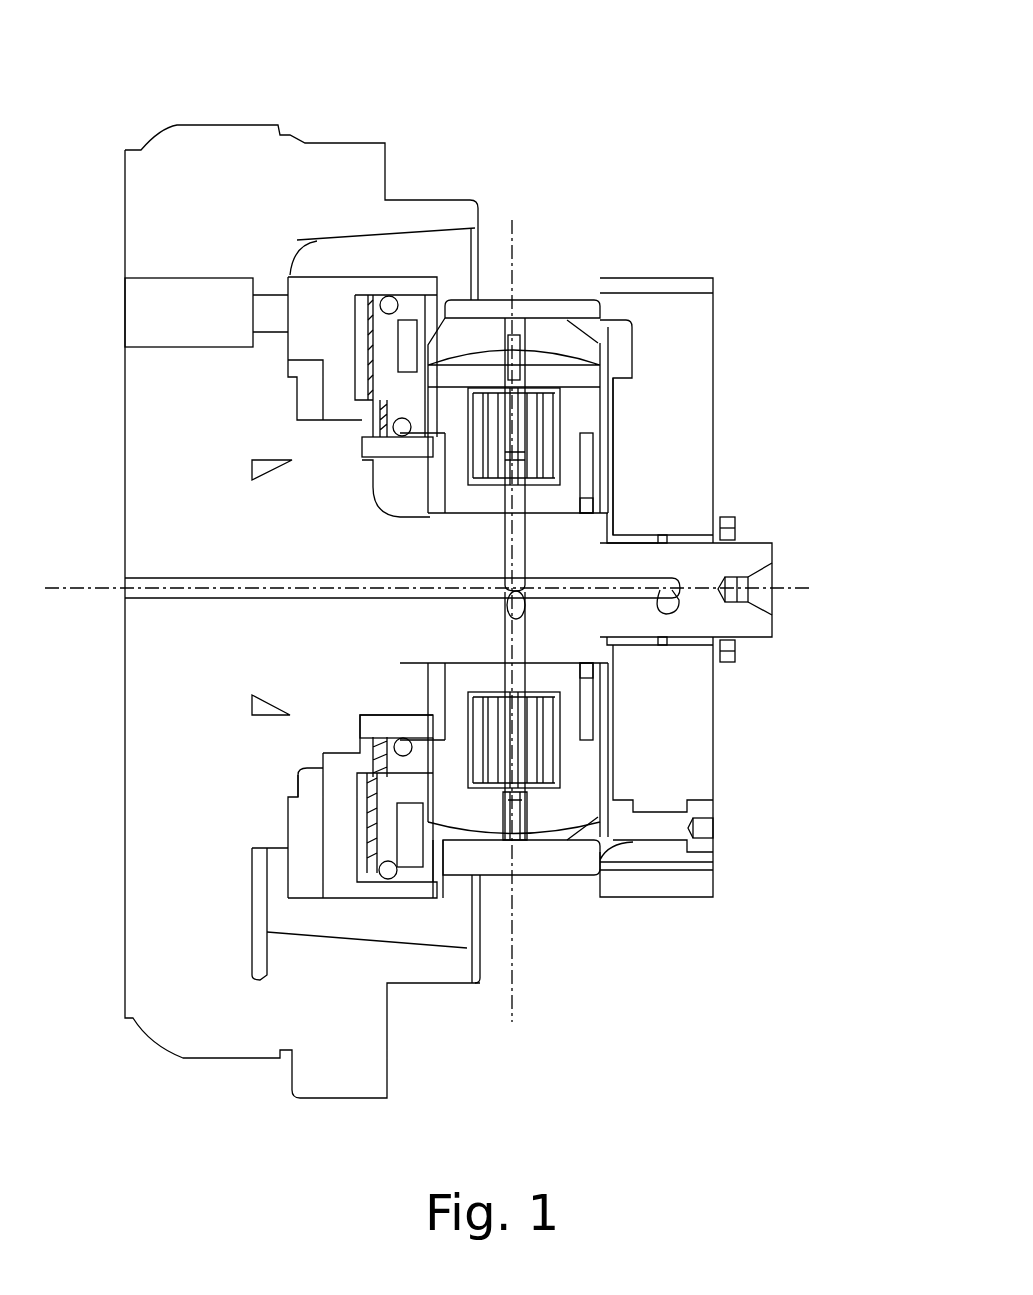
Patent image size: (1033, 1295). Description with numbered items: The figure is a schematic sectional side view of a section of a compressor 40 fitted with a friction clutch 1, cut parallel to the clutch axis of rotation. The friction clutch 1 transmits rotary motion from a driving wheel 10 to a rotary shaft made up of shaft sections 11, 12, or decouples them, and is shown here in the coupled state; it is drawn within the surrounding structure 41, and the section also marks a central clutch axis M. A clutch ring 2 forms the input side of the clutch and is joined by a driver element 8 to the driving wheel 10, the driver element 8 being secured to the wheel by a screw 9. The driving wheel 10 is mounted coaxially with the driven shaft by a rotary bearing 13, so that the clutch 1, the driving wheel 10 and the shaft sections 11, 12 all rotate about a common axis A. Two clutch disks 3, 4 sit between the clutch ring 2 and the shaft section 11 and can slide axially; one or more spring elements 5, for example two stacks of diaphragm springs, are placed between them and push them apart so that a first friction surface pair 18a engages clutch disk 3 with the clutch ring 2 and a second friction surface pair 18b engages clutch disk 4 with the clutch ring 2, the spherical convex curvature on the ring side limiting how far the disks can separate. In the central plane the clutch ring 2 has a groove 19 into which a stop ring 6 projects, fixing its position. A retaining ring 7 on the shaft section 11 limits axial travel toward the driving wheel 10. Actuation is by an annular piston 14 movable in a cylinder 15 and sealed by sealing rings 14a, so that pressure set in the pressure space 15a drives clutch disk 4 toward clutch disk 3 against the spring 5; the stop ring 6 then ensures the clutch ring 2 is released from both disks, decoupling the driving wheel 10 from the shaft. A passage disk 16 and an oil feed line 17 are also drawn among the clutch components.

The friction clutch 1 is at (573, 298).
The clutch ring 2 is at (568, 333).
The clutch disk 3 is at (613, 413).
The clutch disk 4 is at (460, 484).
The spring element 5 is at (470, 441).
The stop ring 6 is at (510, 330).
The retaining ring 7 is at (587, 511).
The driver element 8 is at (487, 303).
The screw 9 is at (713, 838).
The driving wheel 10 is at (687, 322).
The shaft section 11 is at (640, 641).
The shaft section 12 is at (713, 616).
The rotary bearing 13 is at (735, 524).
The annular piston 14 is at (318, 414).
The sealing rings 14a is at (380, 306).
The cylinder 15 is at (333, 300).
The pressure space 15a is at (365, 298).
The passage disk 16 is at (500, 441).
The oil feed line 17 is at (505, 561).
The friction surface pair 18a is at (613, 379).
The friction surface pair 18b is at (470, 960).
The groove 19 is at (540, 318).
The compressor 40 is at (530, 103).
The housing 41 is at (205, 124).
The axis A is at (800, 590).
The motor axis M is at (512, 1003).